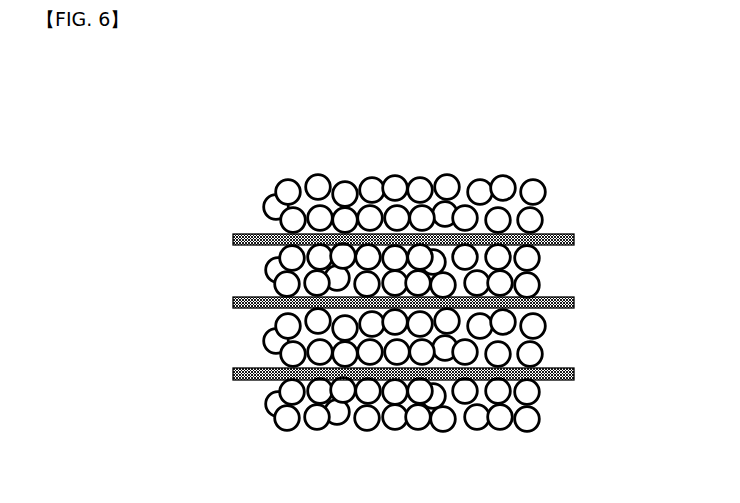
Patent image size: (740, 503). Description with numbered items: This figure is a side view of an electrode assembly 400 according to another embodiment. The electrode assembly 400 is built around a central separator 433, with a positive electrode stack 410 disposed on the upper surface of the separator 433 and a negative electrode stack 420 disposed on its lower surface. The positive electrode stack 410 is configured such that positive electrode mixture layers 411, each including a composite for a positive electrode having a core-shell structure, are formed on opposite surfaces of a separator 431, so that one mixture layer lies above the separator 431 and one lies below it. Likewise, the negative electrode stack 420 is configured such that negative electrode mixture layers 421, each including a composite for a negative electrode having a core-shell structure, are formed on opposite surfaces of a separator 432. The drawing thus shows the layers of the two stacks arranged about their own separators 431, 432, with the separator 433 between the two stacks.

The electrode assembly 400 is at (197, 152).
The positive electrode stack 410 is at (226, 172).
The positive electrode mixture layers 411 is at (553, 197).
The negative electrode stack 420 is at (226, 312).
The negative electrode mixture layers 421 is at (553, 328).
The separator 431 is at (575, 236).
The separator 432 is at (575, 371).
The separator 433 is at (575, 300).